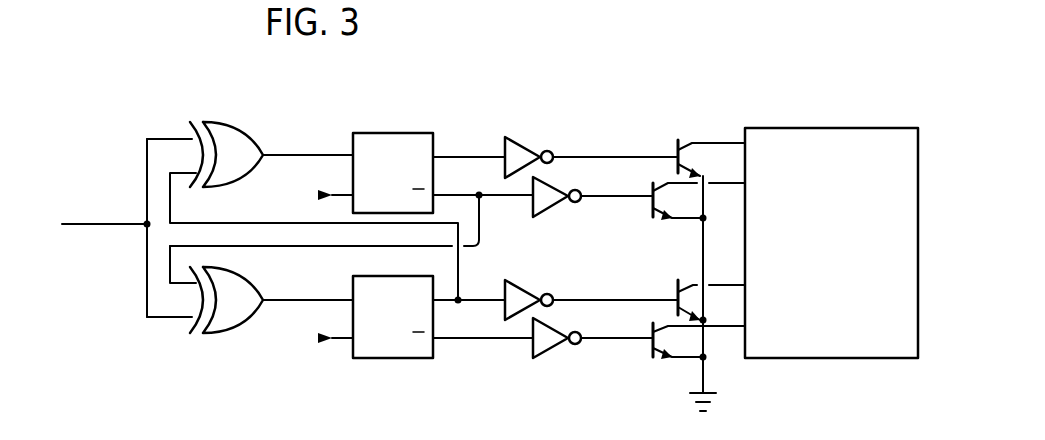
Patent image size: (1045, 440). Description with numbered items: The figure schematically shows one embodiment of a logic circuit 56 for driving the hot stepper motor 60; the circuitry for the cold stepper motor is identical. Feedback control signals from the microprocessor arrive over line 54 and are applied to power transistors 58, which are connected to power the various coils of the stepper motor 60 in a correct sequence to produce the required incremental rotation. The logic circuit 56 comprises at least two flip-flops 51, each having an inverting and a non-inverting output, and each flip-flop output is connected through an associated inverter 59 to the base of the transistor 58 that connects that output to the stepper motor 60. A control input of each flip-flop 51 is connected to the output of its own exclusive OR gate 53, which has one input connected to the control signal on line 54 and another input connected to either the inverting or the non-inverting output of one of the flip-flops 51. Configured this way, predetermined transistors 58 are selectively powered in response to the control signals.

The flip-flop 51 is at (392, 350).
The exclusive OR gate 53 is at (240, 146).
The line 54 is at (117, 221).
The logic circuit 56 is at (393, 118).
The power transistor 58 is at (690, 122).
The inverter 59 is at (520, 147).
The stepper motor 60 is at (845, 133).